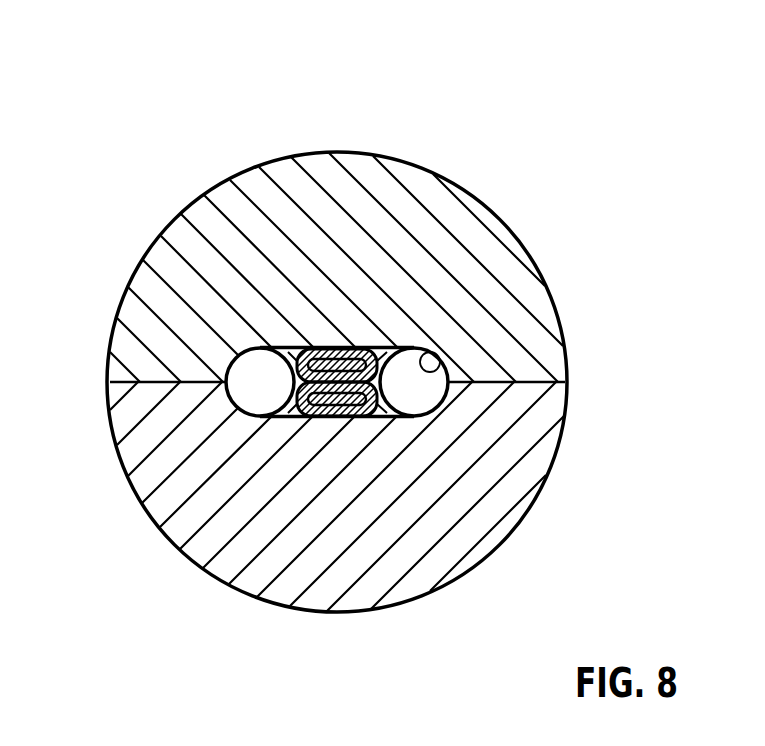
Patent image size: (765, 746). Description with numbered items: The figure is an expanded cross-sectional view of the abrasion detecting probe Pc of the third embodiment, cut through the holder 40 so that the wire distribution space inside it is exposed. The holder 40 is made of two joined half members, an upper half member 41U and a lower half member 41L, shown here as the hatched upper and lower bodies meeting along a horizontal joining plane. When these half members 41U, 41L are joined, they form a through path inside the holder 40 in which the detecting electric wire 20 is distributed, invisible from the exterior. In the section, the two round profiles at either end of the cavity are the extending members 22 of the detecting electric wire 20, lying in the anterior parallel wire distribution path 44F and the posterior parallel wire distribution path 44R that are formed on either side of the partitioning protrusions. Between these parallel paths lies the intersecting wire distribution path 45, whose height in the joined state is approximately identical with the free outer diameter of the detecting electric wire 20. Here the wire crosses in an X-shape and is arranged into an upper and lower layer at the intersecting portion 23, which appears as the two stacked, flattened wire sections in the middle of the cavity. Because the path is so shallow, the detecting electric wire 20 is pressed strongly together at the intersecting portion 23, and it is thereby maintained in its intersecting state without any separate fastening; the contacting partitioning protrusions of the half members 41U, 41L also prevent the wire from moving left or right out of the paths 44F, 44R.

The detecting electric wire 20 is at (287, 338).
The extending members 22 is at (258, 390).
The intersecting portion 23 is at (373, 405).
The holder 40 is at (137, 210).
The upper half member 41U is at (343, 190).
The lower half member 41L is at (415, 557).
The anterior parallel wire distribution path 44F is at (566, 306).
The posterior parallel wire distribution path 44R is at (440, 365).
The intersecting wire distribution path 45 is at (312, 420).
The abrasion detecting probe Pc is at (528, 199).